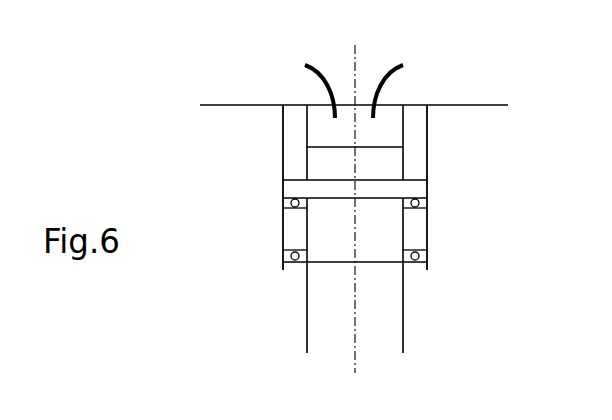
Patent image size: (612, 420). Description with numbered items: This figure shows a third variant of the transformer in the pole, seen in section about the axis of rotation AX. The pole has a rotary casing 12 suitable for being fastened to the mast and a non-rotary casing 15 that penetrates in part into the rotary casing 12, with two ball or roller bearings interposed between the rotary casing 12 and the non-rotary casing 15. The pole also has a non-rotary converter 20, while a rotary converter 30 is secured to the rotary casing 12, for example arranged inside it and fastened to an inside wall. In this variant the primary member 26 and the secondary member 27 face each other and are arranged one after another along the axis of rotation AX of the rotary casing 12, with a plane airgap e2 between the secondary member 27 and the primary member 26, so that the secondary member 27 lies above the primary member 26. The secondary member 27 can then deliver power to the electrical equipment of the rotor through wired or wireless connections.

The rotary casing 12 is at (283, 163).
The non-rotary casing 15 is at (308, 313).
The non-rotary converter 20 is at (393, 323).
The primary member 26 is at (378, 247).
The secondary member 27 is at (393, 163).
The rotary converter 30 is at (306, 133).
The plane airgap e2 is at (291, 184).
The axis of rotation AX is at (357, 355).